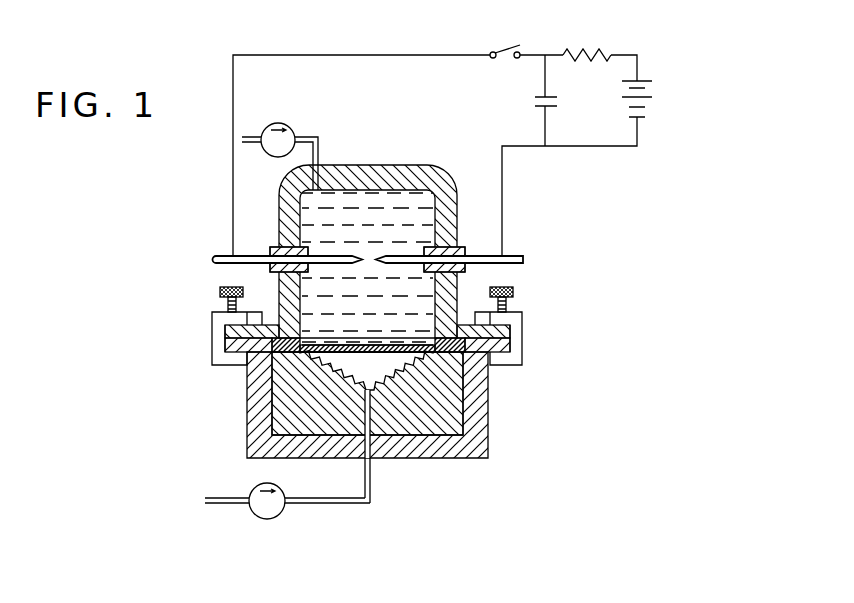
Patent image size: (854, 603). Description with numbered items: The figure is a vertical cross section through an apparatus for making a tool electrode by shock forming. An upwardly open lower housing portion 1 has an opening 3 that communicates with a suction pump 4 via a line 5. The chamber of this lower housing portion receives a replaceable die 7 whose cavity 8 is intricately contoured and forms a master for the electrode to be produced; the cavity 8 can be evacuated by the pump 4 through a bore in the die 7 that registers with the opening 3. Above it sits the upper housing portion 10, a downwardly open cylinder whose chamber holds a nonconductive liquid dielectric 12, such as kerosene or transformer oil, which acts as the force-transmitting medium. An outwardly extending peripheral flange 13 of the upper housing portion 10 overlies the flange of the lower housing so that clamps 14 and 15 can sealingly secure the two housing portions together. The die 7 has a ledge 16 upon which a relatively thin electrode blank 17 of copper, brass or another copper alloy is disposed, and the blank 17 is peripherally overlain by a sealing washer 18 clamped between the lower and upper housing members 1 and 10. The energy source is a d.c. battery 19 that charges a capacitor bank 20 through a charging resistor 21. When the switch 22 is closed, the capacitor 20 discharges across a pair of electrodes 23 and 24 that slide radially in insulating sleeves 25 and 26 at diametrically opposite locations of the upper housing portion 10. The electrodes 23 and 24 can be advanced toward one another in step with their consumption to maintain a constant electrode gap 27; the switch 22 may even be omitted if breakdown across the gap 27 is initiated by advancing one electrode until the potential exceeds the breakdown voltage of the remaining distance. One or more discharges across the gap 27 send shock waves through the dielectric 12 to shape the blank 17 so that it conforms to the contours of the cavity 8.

The lower housing portion 1 is at (480, 425).
The opening 3 is at (367, 450).
The suction pump 4 is at (271, 519).
The line 5 is at (333, 505).
The die 7 is at (282, 398).
The cavity 8 is at (397, 380).
The upper housing portion 10 is at (373, 170).
The liquid dielectric 12 is at (413, 218).
The peripheral flange 13 is at (497, 333).
The clamp 14 is at (513, 347).
The clamp 15 is at (213, 325).
The ledge 16 is at (282, 343).
The electrode blank 17 is at (378, 347).
The sealing washer 18 is at (463, 349).
The battery 19 is at (650, 104).
The capacitor bank 20 is at (535, 100).
The charging resistor 21 is at (586, 50).
The switch 22 is at (513, 48).
The electrode 23 is at (216, 255).
The electrode 24 is at (525, 258).
The insulating sleeve 25 is at (272, 247).
The insulating sleeve 26 is at (458, 247).
The electrode gap 27 is at (366, 255).